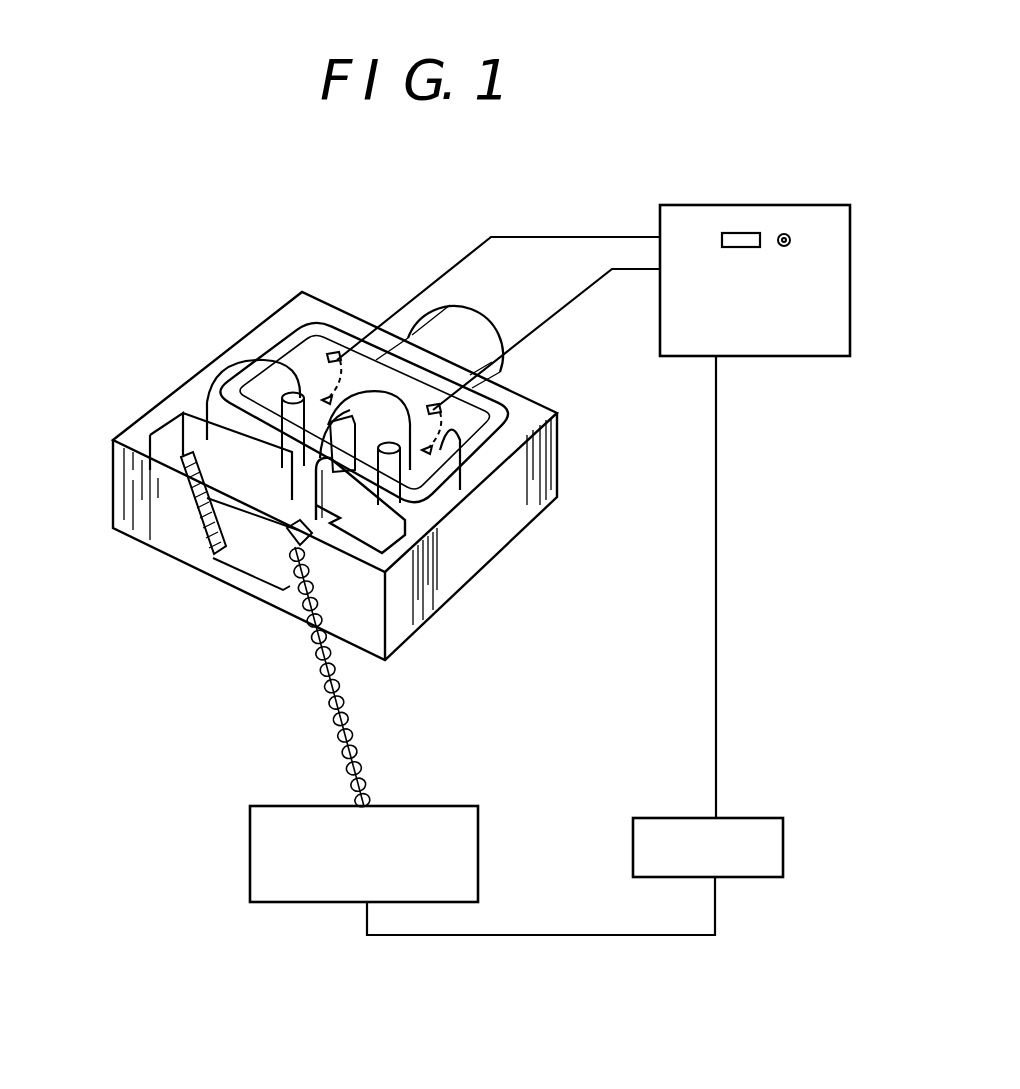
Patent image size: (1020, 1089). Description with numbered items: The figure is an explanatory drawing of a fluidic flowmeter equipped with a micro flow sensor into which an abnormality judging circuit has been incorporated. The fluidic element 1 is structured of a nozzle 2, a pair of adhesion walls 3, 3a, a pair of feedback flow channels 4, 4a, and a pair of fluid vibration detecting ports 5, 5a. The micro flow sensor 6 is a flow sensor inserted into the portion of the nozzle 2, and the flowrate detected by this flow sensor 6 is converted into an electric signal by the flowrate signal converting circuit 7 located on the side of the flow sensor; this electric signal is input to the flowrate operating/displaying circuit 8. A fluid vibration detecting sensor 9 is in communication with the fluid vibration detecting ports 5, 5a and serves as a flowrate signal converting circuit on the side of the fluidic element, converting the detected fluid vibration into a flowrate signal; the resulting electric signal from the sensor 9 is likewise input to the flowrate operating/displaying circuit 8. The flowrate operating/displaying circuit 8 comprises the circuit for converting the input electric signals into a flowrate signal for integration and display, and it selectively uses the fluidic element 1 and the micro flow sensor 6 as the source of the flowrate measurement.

The fluidic element 1 is at (220, 366).
The nozzle 2 is at (300, 497).
The adhesion wall 3 is at (293, 396).
The adhesion wall 3a is at (392, 478).
The feedback flow channel 4 is at (272, 387).
The feedback flow channel 4a is at (413, 487).
The fluid vibration detecting port 5 is at (340, 397).
The fluid vibration detecting port 5a is at (430, 478).
The micro flow sensor 6 is at (300, 514).
The flowrate signal converting circuit 7 is at (480, 842).
The flowrate operating/displaying circuit 8 is at (745, 818).
The fluid vibration detecting sensor 9 is at (702, 205).